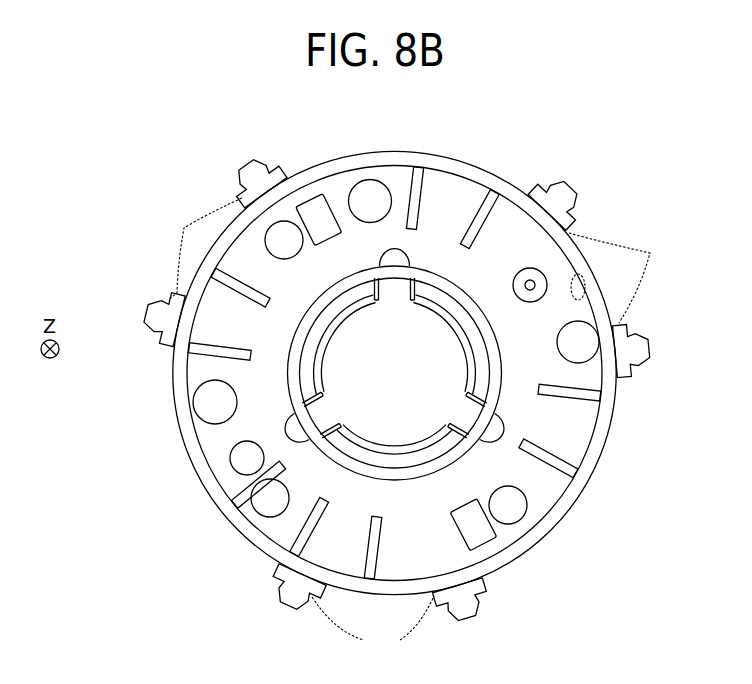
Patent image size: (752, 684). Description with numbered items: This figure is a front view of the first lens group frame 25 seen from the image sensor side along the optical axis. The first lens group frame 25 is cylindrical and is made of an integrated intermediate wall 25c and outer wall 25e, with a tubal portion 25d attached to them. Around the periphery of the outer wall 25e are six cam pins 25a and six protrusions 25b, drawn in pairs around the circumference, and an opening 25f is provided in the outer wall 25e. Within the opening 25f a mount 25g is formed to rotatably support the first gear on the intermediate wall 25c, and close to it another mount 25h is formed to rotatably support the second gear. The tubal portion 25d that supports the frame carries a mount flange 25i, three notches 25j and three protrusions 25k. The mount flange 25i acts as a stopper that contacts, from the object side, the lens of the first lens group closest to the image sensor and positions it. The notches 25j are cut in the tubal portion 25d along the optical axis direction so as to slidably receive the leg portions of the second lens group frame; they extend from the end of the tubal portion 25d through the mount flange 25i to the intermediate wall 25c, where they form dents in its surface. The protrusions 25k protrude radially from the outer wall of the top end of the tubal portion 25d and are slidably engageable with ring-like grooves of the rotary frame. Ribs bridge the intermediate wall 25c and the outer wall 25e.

The first lens group frame 25 is at (531, 139).
The cam pin 25a is at (248, 170).
The protrusion 25b is at (185, 228).
The intermediate wall 25c is at (448, 213).
The tubal portion 25d is at (268, 369).
The outer wall 25e is at (404, 150).
The opening 25f is at (567, 261).
The mount 25g is at (579, 302).
The mount 25h is at (512, 283).
The mount flange 25i is at (416, 446).
The notch 25j is at (316, 415).
The protrusion 25k is at (423, 258).